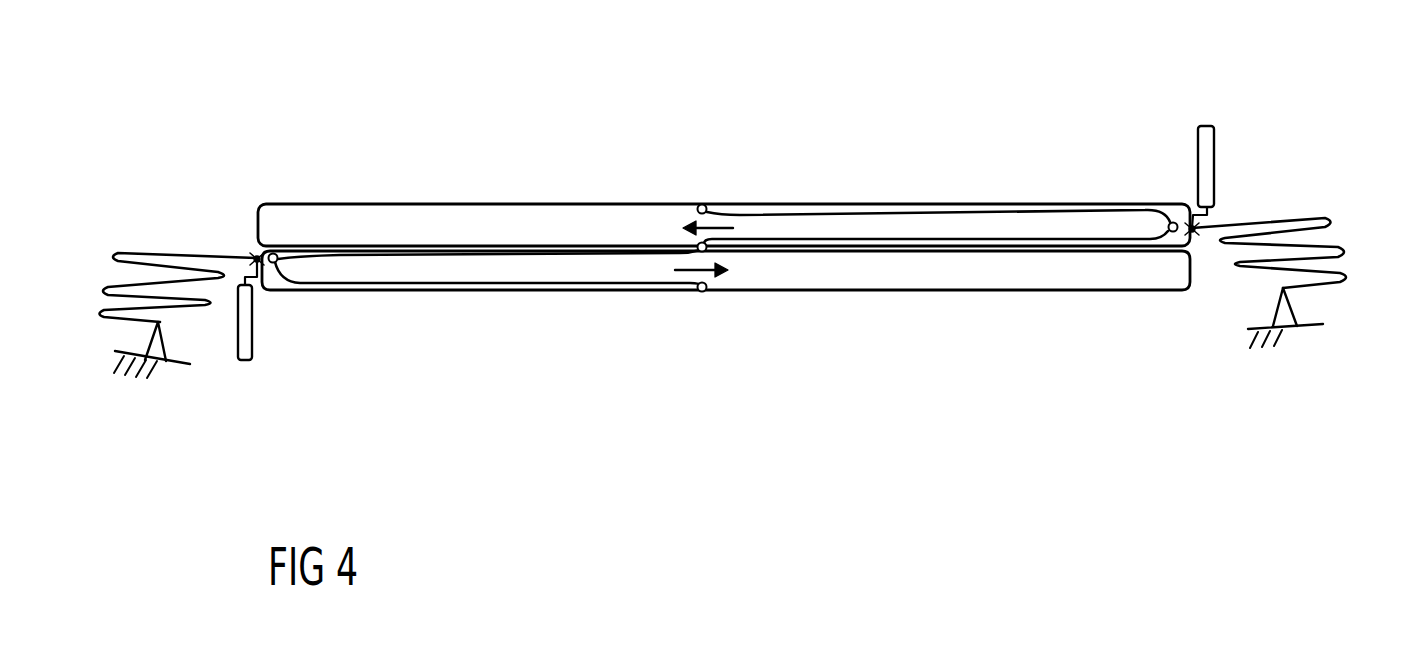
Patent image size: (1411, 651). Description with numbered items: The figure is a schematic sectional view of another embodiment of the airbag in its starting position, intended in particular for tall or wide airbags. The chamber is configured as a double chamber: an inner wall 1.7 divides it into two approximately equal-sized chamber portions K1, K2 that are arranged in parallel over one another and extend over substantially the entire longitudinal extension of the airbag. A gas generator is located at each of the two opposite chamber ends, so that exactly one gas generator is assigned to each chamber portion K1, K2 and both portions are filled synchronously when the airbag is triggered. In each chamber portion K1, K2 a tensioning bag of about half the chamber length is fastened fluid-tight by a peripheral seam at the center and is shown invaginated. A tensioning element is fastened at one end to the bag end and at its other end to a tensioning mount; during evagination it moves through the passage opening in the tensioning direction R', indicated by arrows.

The inner wall 1.7 is at (442, 252).
The chamber portion K1 is at (553, 213).
The chamber portion K2 is at (873, 290).
The tensioning direction R' is at (707, 249).